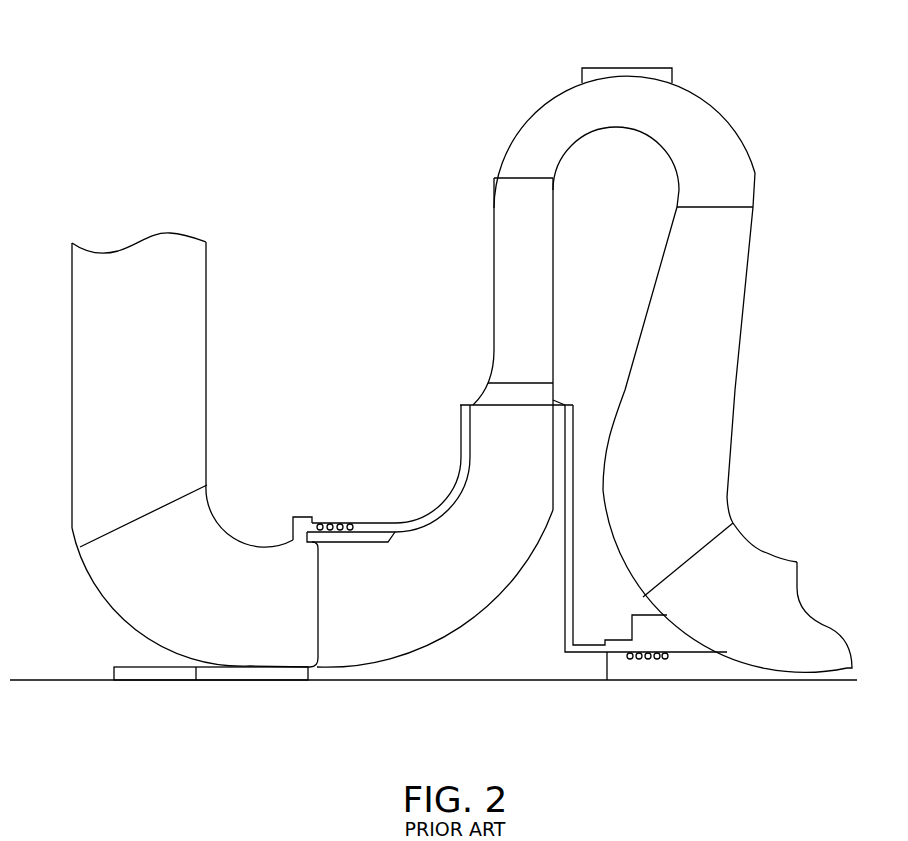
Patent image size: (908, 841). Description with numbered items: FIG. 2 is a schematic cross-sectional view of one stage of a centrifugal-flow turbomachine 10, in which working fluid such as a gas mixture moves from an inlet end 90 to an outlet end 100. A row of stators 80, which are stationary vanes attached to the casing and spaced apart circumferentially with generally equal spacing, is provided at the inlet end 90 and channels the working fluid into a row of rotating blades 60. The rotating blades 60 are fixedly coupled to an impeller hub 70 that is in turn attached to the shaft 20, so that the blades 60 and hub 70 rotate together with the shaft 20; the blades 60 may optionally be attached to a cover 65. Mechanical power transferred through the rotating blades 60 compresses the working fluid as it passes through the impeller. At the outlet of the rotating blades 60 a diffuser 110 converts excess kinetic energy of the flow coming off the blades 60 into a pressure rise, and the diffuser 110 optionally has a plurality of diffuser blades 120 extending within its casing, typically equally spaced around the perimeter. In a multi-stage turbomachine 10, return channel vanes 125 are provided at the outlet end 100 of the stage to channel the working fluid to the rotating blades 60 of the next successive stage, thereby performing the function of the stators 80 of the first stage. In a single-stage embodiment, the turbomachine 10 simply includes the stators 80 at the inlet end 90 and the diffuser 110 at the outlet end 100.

The turbomachine 10 is at (832, 101).
The shaft 20 is at (696, 682).
The rotating blades 60 is at (422, 623).
The cover 65 is at (355, 532).
The impeller hub 70 is at (560, 667).
The stators 80 is at (187, 383).
The inlet end 90 is at (165, 218).
The outlet end 100 is at (819, 598).
The diffuser 110 is at (495, 327).
The diffuser blades 120 is at (497, 272).
The return channel vanes 125 is at (725, 385).